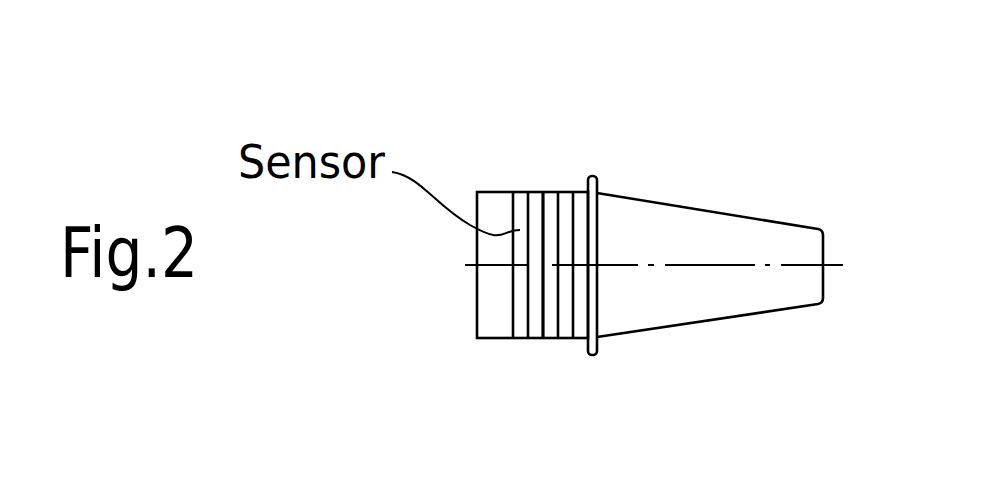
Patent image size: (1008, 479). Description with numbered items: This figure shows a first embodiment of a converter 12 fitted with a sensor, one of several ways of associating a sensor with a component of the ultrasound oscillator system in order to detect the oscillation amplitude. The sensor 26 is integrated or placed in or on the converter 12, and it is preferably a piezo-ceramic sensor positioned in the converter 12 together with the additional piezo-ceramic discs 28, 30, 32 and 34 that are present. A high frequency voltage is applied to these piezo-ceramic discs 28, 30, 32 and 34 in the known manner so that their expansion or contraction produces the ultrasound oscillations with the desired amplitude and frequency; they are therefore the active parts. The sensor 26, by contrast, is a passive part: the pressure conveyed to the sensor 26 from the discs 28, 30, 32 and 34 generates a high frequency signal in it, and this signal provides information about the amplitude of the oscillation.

The converter 12 is at (633, 197).
The sensor 26 is at (520, 308).
The piezo-ceramic disc 28 is at (533, 196).
The piezo-ceramic disc 30 is at (553, 195).
The piezo-ceramic disc 32 is at (565, 195).
The piezo-ceramic disc 34 is at (584, 328).